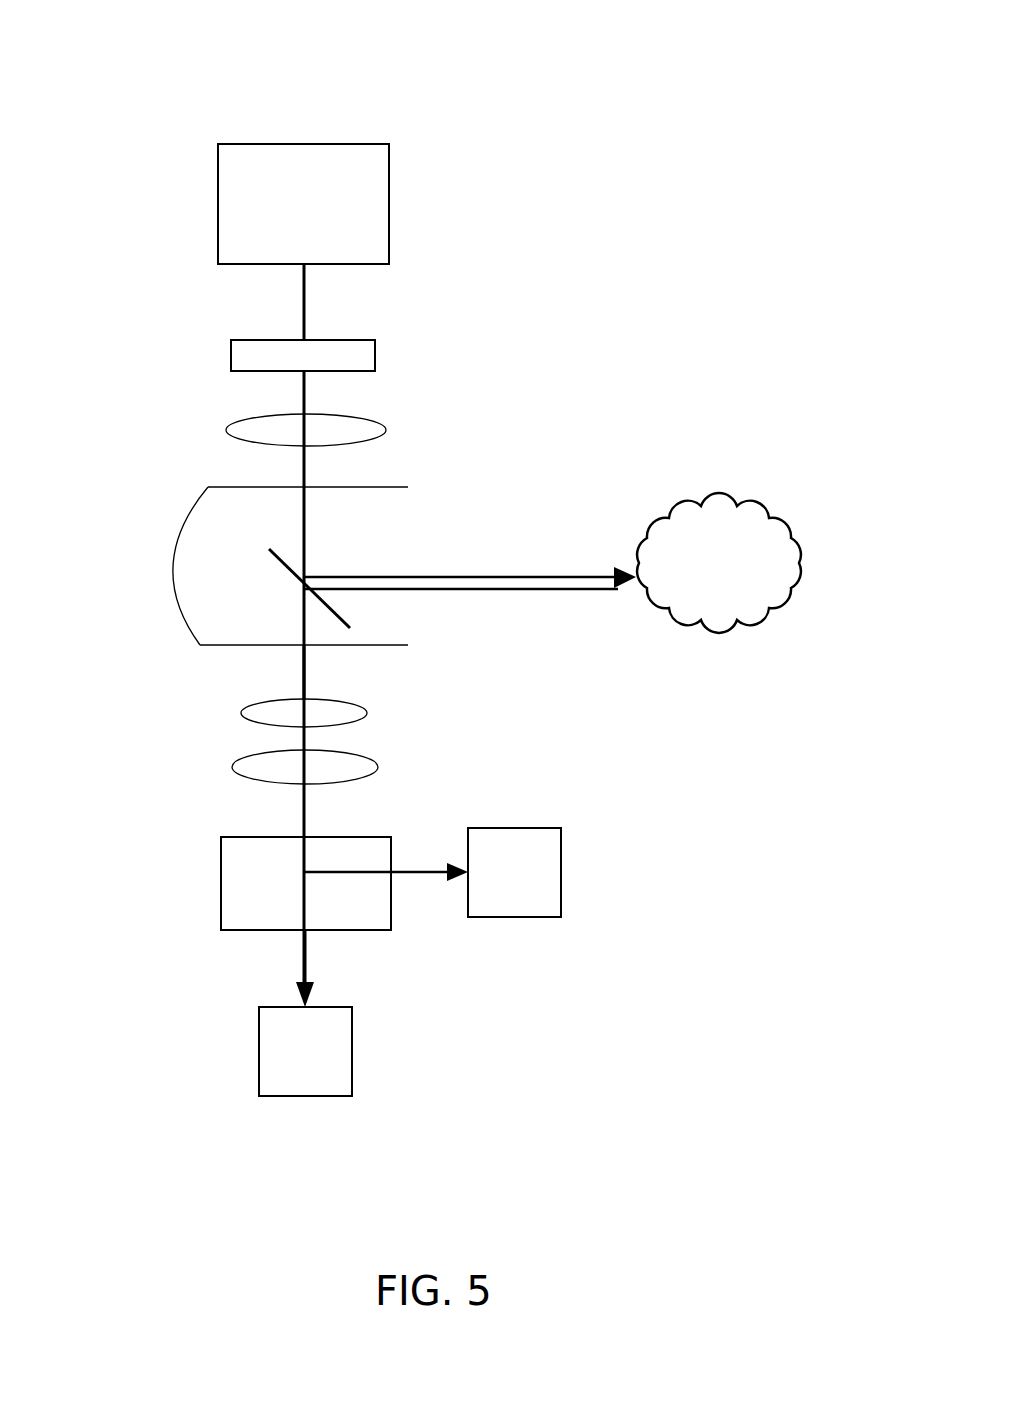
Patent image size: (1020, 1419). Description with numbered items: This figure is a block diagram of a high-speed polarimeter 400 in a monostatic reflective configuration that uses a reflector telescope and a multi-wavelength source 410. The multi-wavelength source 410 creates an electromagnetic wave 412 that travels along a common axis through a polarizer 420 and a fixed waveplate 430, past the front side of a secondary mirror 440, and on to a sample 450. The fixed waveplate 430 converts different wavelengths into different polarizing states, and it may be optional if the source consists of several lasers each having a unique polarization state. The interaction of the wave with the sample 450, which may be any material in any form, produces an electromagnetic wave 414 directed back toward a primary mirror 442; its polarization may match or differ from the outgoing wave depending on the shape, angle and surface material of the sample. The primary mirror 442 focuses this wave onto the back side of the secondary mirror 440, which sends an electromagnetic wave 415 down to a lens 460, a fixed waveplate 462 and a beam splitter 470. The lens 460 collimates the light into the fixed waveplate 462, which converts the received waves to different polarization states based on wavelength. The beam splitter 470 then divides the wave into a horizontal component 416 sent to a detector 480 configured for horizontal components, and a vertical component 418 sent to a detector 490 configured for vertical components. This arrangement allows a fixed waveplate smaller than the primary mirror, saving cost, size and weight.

The high-speed polarimeter 400 is at (632, 89).
The multi-wavelength source 410 is at (218, 210).
The electromagnetic wave 412 is at (304, 304).
The polarizer 420 is at (231, 360).
The fixed waveplate 430 is at (385, 430).
The secondary mirror 440 is at (282, 566).
The primary mirror 442 is at (177, 565).
The sample 450 is at (684, 528).
The electromagnetic wave 414 is at (565, 592).
The electromagnetic wave 415 is at (305, 660).
The lens 460 is at (367, 713).
The fixed waveplate 462 is at (378, 767).
The beam splitter 470 is at (221, 885).
The detector 480 is at (561, 870).
The horizontal component 416 is at (418, 873).
The vertical component 418 is at (305, 962).
The detector 490 is at (259, 1053).